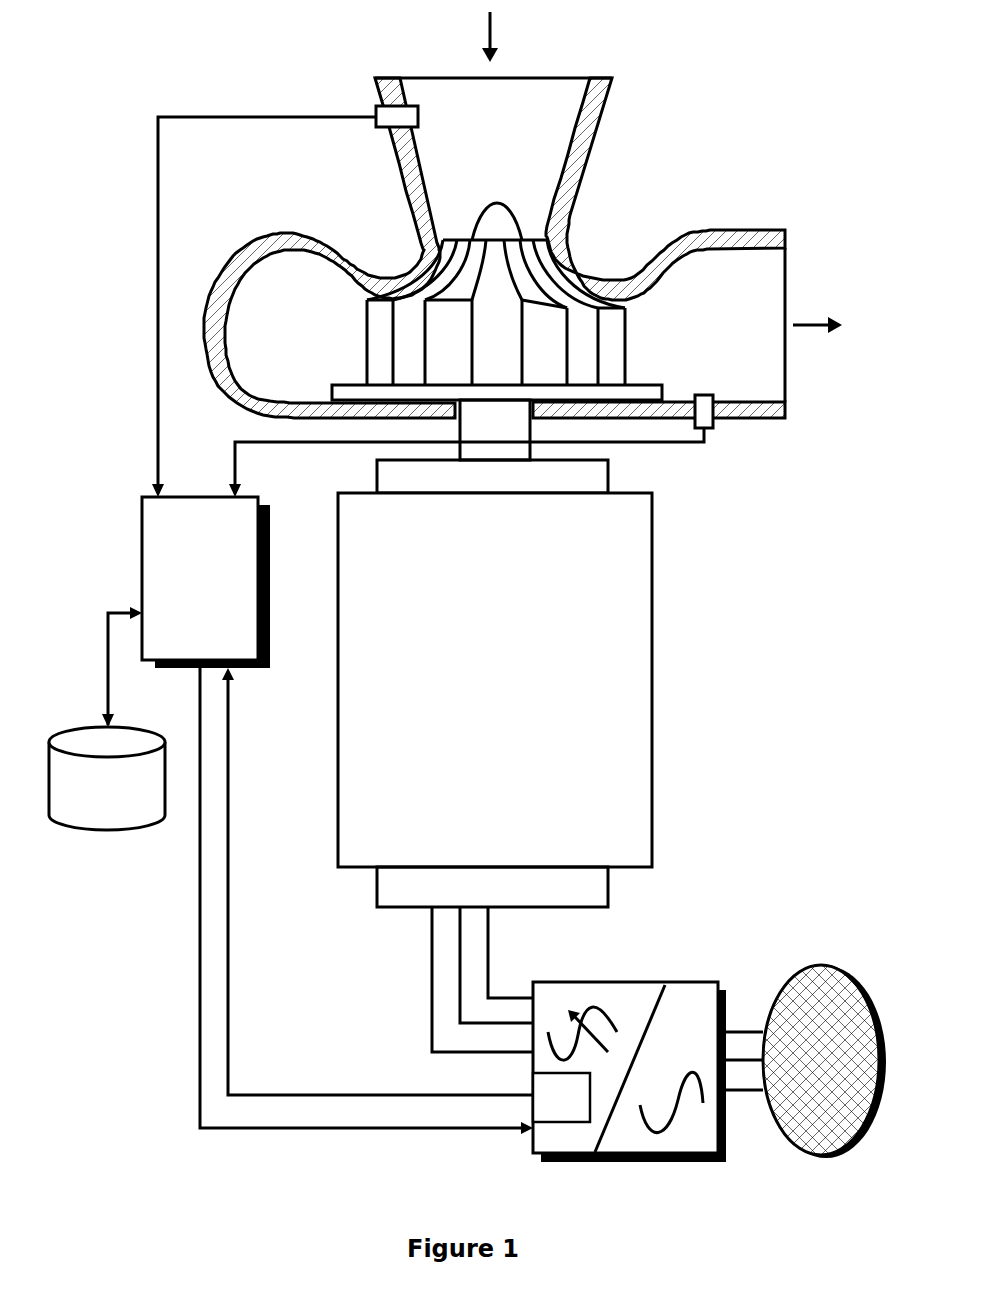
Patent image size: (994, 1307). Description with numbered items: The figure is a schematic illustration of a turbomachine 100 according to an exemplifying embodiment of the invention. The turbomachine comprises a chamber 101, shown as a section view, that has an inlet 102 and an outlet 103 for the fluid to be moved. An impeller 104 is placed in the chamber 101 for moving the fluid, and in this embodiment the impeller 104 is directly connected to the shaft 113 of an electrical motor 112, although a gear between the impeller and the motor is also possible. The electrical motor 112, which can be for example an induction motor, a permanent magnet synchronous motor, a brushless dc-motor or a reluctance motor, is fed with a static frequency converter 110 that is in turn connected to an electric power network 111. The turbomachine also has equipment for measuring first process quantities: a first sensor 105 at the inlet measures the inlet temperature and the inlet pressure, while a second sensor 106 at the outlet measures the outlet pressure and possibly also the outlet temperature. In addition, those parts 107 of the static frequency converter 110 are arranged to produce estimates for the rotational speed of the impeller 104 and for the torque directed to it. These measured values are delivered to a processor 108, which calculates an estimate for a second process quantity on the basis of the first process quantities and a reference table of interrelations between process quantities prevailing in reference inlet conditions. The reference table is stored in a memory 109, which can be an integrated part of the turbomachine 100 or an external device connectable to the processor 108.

The turbomachine 100 is at (318, 75).
The chamber 101 is at (277, 297).
The inlet 102 is at (543, 95).
The outlet 103 is at (757, 268).
The impeller 104 is at (370, 342).
The first sensor 105 is at (418, 112).
The second sensor 106 is at (701, 394).
The parts of the static frequency converter 107 is at (547, 1109).
The processor 108 is at (183, 584).
The memory 109 is at (90, 804).
The static frequency converter 110 is at (629, 1028).
The electric power network 111 is at (806, 965).
The electrical motor 112 is at (478, 692).
The shaft 113 is at (478, 431).